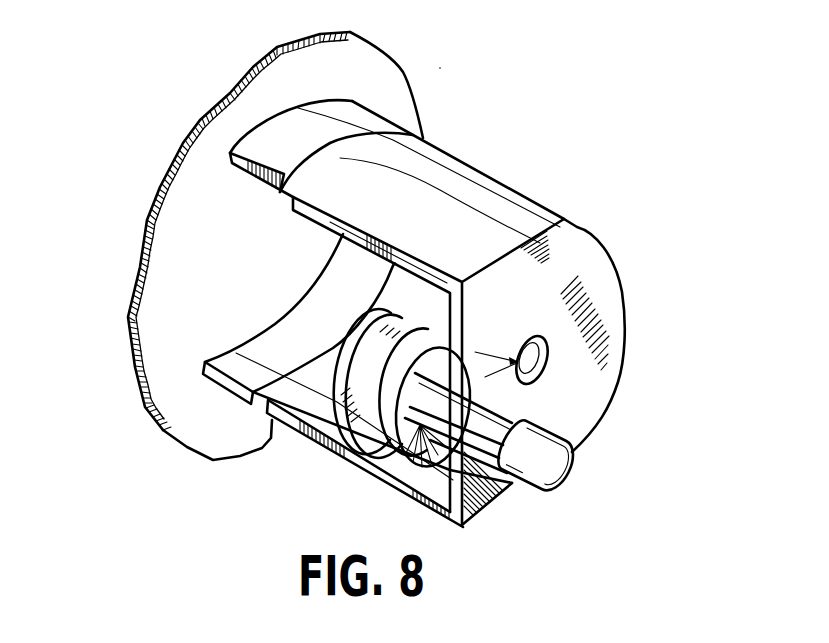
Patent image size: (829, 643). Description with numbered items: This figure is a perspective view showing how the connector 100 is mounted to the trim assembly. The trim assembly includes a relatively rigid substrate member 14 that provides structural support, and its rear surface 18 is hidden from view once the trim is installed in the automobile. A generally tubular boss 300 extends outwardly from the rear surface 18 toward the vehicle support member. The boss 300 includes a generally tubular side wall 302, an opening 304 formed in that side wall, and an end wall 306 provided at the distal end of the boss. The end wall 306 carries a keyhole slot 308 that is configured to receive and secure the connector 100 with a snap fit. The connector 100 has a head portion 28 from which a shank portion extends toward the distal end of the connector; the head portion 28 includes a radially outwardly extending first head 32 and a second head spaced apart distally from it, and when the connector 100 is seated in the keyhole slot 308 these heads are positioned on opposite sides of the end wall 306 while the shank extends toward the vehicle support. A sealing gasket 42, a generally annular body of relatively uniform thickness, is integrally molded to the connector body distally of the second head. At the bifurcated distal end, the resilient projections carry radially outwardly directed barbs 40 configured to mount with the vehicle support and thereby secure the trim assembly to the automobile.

The substrate member 14 is at (266, 88).
The rear surface 18 is at (413, 101).
The head portion 28 is at (313, 406).
The first head 32 is at (337, 440).
The barbs 40 is at (508, 480).
The sealing gasket 42 is at (420, 462).
The connector 100 is at (525, 404).
The tubular boss 300 is at (489, 194).
The tubular side wall 302 is at (477, 247).
The opening 304 is at (233, 268).
The end wall 306 is at (613, 304).
The keyhole slot 308 is at (540, 331).